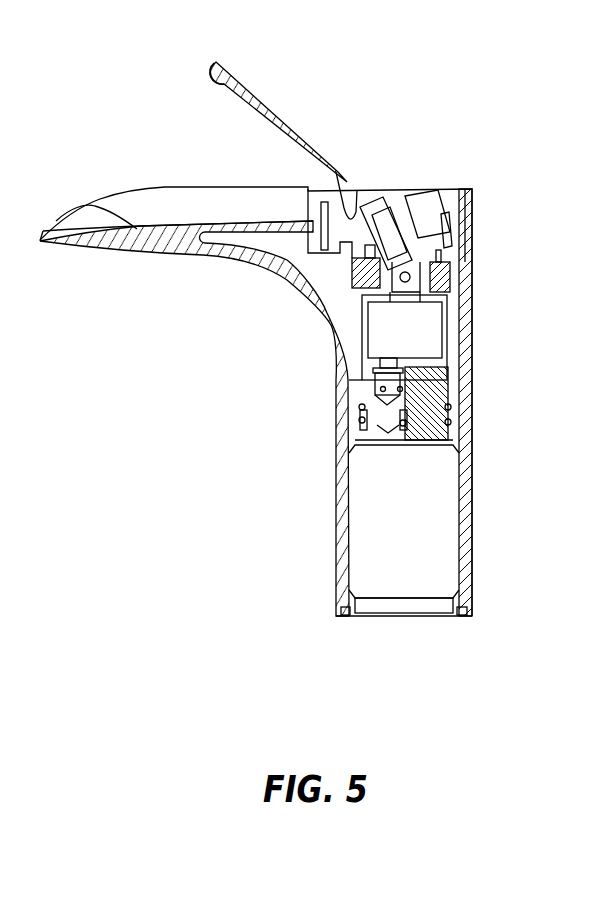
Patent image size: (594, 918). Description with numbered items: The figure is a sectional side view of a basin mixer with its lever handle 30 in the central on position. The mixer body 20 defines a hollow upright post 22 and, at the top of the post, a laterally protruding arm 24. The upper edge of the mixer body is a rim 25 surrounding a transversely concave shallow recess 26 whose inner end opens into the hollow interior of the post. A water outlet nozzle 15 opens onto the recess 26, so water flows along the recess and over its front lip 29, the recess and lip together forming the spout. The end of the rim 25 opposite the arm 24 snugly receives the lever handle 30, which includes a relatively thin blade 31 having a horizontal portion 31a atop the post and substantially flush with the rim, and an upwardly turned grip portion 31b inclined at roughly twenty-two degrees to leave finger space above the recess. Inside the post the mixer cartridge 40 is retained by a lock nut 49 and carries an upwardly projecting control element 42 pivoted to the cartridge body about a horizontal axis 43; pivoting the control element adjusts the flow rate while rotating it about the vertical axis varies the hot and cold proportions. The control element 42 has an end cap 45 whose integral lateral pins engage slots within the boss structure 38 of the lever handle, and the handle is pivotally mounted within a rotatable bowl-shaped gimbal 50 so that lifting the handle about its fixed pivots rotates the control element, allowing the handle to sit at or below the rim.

The water outlet nozzle 15 is at (311, 227).
The mixer body 20 is at (507, 518).
The hollow upright post 22 is at (467, 567).
The laterally protruding arm 24 is at (123, 238).
The rim 25 is at (473, 189).
The recess 26 is at (87, 205).
The front lip 29 is at (45, 241).
The lever handle 30 is at (441, 77).
The blade 31 is at (343, 163).
The horizontal portion 31a is at (420, 190).
The grip portion 31b is at (236, 74).
The boss structure 38 is at (448, 223).
The mixer cartridge 40 is at (430, 378).
The control element 42 is at (450, 250).
The horizontal axis 43 is at (450, 267).
The end cap 45 is at (432, 194).
The lock nut 49 is at (363, 281).
The gimbal 50 is at (466, 198).